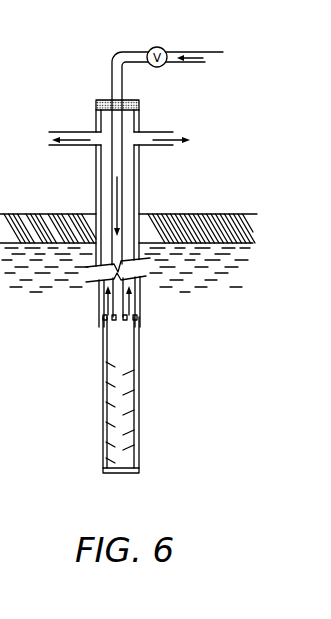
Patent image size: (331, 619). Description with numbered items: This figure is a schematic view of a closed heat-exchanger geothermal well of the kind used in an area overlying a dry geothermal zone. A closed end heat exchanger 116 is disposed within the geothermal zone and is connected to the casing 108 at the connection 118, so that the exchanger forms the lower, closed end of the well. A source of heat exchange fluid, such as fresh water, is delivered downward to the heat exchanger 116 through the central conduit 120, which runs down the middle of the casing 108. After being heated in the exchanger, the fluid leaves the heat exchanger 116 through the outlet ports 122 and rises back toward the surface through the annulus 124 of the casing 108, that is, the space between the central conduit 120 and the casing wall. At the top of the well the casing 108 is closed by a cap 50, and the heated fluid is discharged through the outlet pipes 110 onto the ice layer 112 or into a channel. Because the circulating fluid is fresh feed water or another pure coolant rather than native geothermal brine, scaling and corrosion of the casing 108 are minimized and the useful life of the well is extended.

The cap 50 is at (107, 98).
The casing 108 is at (143, 278).
The outlet pipes 110 is at (163, 146).
The ice layer 112 is at (218, 214).
The closed end heat exchanger 116 is at (140, 400).
The connection of heat exchanger to casing 118 is at (142, 322).
The central conduit 120 is at (112, 171).
The outlet ports 122 is at (103, 313).
The annulus 124 is at (108, 190).